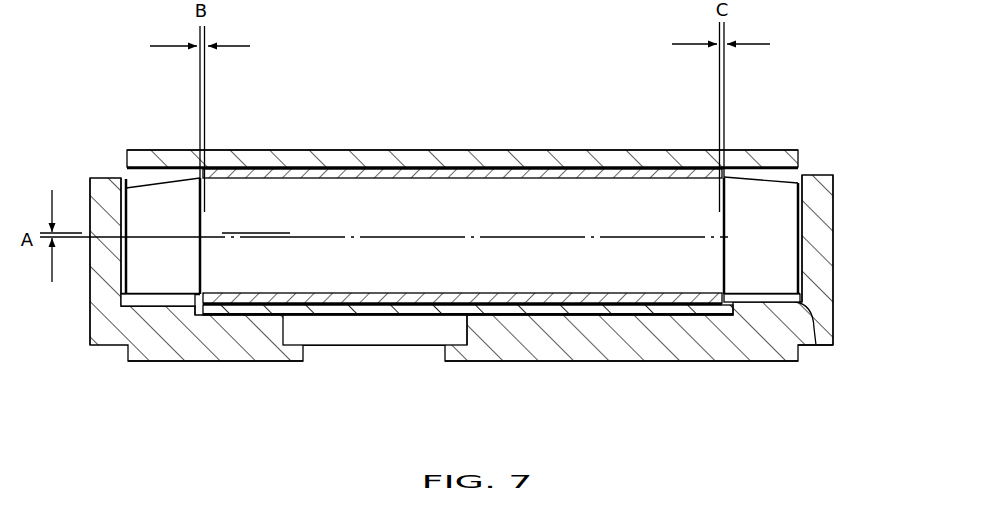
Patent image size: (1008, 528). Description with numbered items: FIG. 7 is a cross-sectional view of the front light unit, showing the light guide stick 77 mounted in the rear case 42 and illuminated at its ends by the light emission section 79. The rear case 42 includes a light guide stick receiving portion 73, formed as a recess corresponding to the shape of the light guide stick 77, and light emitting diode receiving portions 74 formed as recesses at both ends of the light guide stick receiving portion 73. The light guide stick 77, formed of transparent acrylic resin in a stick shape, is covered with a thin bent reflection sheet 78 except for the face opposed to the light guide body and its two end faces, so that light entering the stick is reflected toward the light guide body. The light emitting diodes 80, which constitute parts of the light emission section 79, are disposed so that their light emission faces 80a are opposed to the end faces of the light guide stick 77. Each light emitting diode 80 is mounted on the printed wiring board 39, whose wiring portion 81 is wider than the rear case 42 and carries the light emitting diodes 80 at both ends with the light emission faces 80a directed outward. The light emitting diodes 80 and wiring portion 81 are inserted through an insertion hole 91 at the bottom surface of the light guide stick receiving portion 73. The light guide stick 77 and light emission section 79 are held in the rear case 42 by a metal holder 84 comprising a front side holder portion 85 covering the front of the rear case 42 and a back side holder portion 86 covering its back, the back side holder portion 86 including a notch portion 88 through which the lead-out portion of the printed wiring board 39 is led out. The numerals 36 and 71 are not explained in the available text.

The left side wall 36 is at (101, 178).
The printed wiring board 39 is at (554, 308).
The rear case 42 is at (835, 216).
The package housing 71 is at (468, 266).
The light guide stick receiving portion 73 is at (745, 345).
The light emitting diode receiving portion 74 is at (141, 308).
The light guide stick 77 is at (402, 192).
The reflection sheet 78 is at (334, 172).
The light emission section 79 is at (782, 304).
The light emitting diode 80 is at (460, 256).
The light emission face 80a is at (204, 212).
The wiring portion 81 is at (622, 317).
The holder 84 is at (462, 137).
The front side holder portion 85 is at (582, 149).
The back side holder portion 86 is at (217, 355).
The notch portion 88 is at (453, 330).
The insertion hole 91 is at (348, 331).